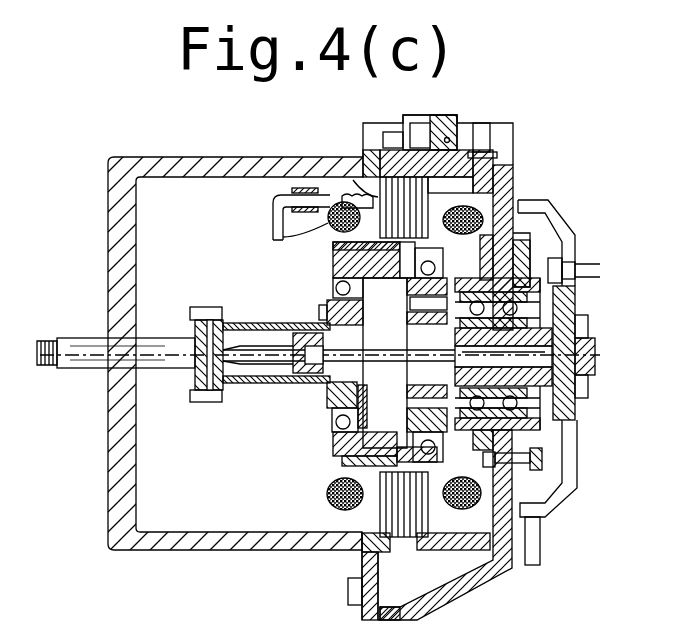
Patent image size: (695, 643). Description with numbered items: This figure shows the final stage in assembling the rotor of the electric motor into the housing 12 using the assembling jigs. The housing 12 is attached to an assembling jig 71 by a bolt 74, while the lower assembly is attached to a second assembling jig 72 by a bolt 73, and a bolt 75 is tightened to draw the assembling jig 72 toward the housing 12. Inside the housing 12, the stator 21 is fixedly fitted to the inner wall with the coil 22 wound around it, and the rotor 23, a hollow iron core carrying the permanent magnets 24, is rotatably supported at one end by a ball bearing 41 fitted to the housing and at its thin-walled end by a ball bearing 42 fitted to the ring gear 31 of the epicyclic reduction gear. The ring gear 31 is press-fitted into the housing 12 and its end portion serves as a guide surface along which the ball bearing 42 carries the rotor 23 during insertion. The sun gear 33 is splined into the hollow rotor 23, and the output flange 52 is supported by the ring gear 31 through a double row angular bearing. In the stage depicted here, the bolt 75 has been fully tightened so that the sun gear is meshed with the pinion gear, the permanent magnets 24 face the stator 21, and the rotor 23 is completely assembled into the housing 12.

The housing 12 is at (510, 177).
The stator 21 is at (347, 158).
The coil 22 is at (273, 236).
The rotor 23 is at (333, 452).
The permanent magnets 24 is at (342, 463).
The ring gear 31 is at (560, 427).
The sun gear 33 is at (387, 381).
The ball bearing 41 is at (330, 420).
The ball bearing 42 is at (483, 458).
The output flange 52 is at (572, 233).
The assembling jig 71 is at (108, 228).
The assembling jig 72 is at (252, 322).
The bolt 73 is at (322, 300).
The bolt 74 is at (348, 592).
The bolt 75 is at (77, 368).